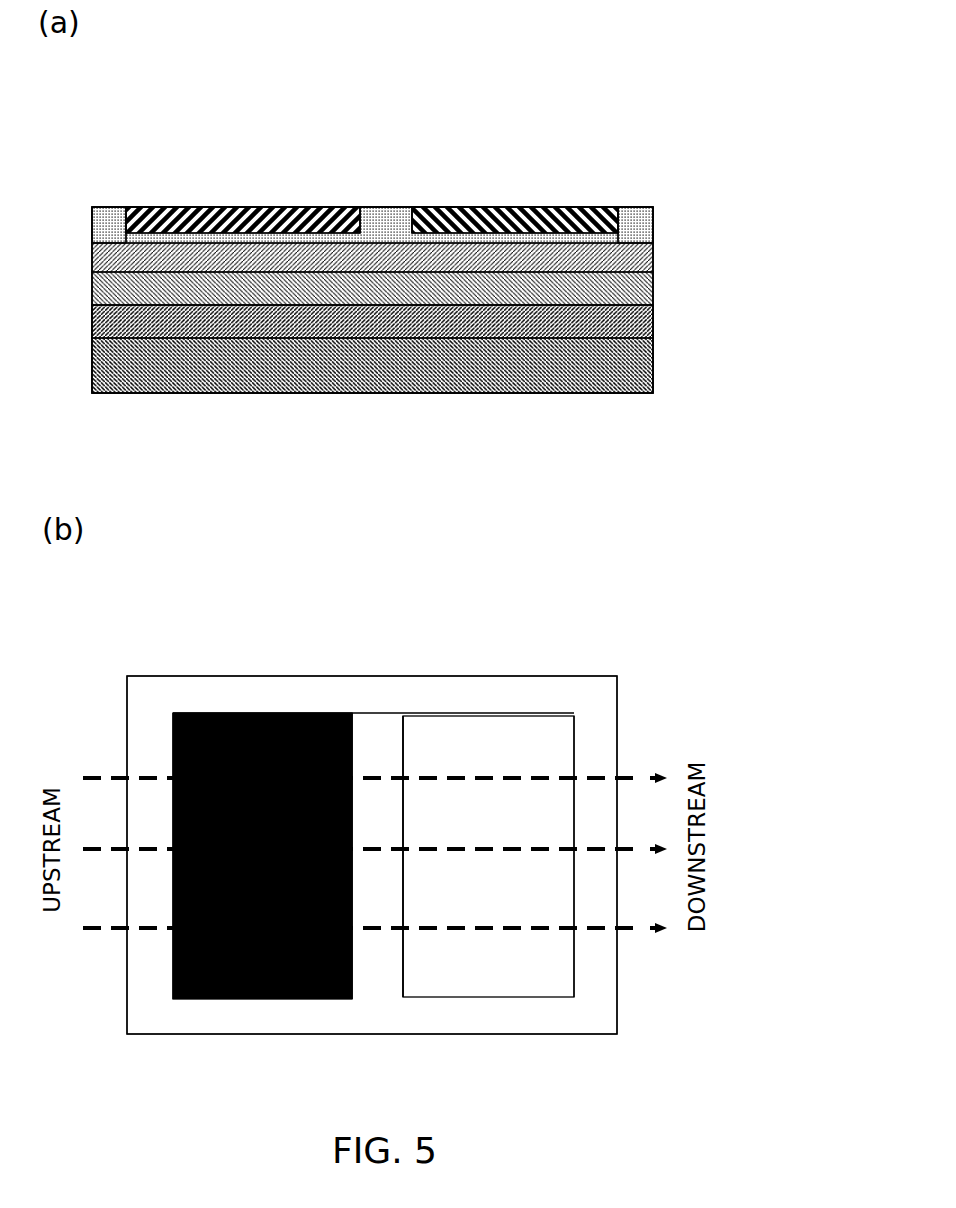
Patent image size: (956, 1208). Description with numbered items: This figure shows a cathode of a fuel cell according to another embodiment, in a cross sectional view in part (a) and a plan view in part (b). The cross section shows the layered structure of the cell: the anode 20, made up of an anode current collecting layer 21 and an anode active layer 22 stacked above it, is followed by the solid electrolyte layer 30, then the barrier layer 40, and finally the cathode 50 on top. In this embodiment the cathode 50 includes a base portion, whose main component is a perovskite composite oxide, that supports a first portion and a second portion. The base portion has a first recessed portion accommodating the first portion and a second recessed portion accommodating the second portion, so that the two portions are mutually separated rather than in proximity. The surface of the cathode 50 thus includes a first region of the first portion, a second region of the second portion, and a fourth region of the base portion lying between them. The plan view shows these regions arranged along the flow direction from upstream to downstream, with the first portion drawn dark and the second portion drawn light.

The anode 20 is at (735, 322).
The anode current collecting layer 21 is at (655, 365).
The anode active layer 22 is at (655, 326).
The solid electrolyte layer 30 is at (655, 293).
The barrier layer 40 is at (655, 262).
The cathode 50 is at (655, 225).